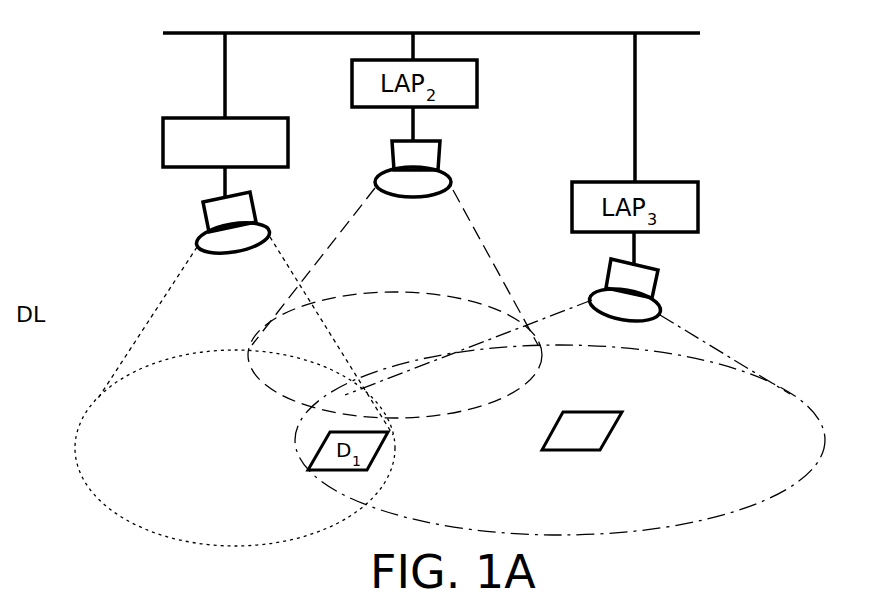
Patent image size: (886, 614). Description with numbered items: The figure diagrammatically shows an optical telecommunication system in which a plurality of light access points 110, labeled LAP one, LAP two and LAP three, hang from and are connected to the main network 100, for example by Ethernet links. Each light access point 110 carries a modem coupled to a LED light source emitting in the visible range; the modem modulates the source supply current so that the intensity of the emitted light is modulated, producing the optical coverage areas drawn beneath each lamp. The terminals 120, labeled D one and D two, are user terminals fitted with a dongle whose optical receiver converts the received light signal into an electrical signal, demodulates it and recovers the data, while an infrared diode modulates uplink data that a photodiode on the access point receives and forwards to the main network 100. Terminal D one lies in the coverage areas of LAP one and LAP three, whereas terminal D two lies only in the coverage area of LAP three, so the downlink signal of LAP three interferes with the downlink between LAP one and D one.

The main network 100 is at (163, 33).
The light access point 110 is at (163, 128).
The terminal 120 is at (627, 408).